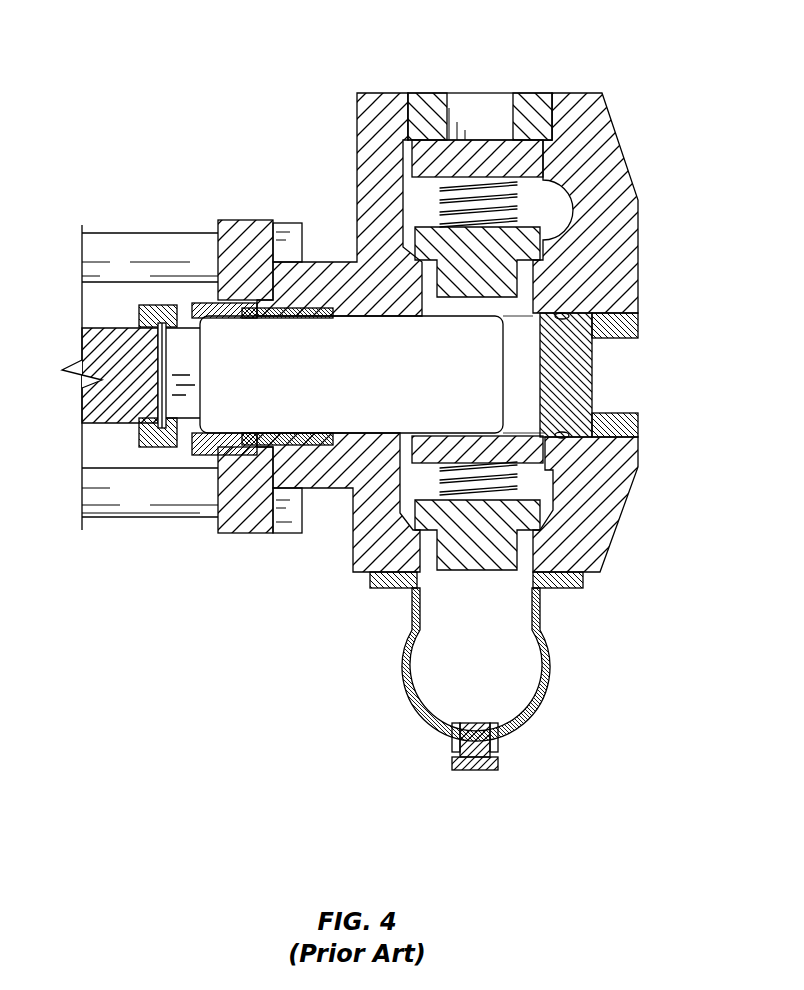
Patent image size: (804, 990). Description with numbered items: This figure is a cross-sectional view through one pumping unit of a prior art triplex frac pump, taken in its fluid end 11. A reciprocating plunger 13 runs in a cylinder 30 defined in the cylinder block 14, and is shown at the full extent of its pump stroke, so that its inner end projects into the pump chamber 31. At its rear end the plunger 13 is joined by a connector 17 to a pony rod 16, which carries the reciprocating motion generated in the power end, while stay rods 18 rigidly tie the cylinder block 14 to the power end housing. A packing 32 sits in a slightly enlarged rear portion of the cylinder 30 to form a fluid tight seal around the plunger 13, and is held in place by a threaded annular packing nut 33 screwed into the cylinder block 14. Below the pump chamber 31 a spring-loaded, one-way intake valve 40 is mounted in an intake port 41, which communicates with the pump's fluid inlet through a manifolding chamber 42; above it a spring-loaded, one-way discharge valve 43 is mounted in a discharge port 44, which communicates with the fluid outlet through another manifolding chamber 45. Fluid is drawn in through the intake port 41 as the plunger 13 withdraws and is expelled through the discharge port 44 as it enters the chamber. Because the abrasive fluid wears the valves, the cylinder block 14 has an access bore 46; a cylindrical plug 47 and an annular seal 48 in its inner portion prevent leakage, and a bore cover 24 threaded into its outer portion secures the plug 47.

The fluid end 11 is at (385, 93).
The plunger 13 is at (302, 376).
The cylinder block 14 is at (245, 235).
The pony rod 16 is at (82, 405).
The connector 17 is at (160, 457).
The stay rod 18 is at (125, 248).
The bore cover 24 is at (633, 425).
The cylinder 30 is at (380, 318).
The pump chamber 31 is at (520, 415).
The packing 32 is at (288, 321).
The packing nut 33 is at (222, 433).
The intake valve 40 is at (527, 510).
The intake port 41 is at (527, 552).
The manifolding chamber 42 is at (535, 693).
The discharge valve 43 is at (540, 240).
The discharge port 44 is at (532, 296).
The manifolding chamber 45 is at (555, 219).
The access bore 46 is at (638, 323).
The plug 47 is at (580, 398).
The seal 48 is at (565, 318).